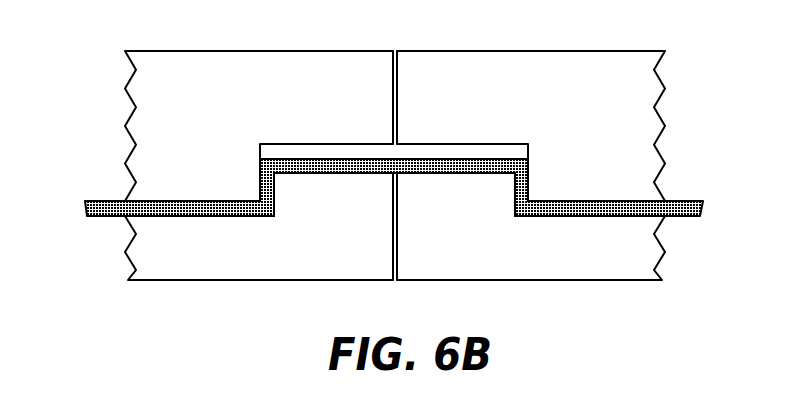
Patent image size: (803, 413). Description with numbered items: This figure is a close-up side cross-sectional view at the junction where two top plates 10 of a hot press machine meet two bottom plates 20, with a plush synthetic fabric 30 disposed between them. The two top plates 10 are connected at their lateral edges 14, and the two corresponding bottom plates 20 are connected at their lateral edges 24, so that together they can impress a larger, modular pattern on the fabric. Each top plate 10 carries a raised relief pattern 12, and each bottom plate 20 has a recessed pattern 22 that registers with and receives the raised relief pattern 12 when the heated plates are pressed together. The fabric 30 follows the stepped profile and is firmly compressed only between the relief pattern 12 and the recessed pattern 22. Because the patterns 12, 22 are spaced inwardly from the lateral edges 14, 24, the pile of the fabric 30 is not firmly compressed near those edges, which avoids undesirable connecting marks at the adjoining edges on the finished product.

The top plate 10 is at (140, 84).
The raised relief pattern 12 is at (198, 201).
The lateral edge of top plate 14 is at (392, 82).
The bottom plate 20 is at (145, 248).
The recessed pattern 22 is at (222, 217).
The lateral edge of bottom plate 24 is at (398, 243).
The plush synthetic fabric 30 is at (674, 201).